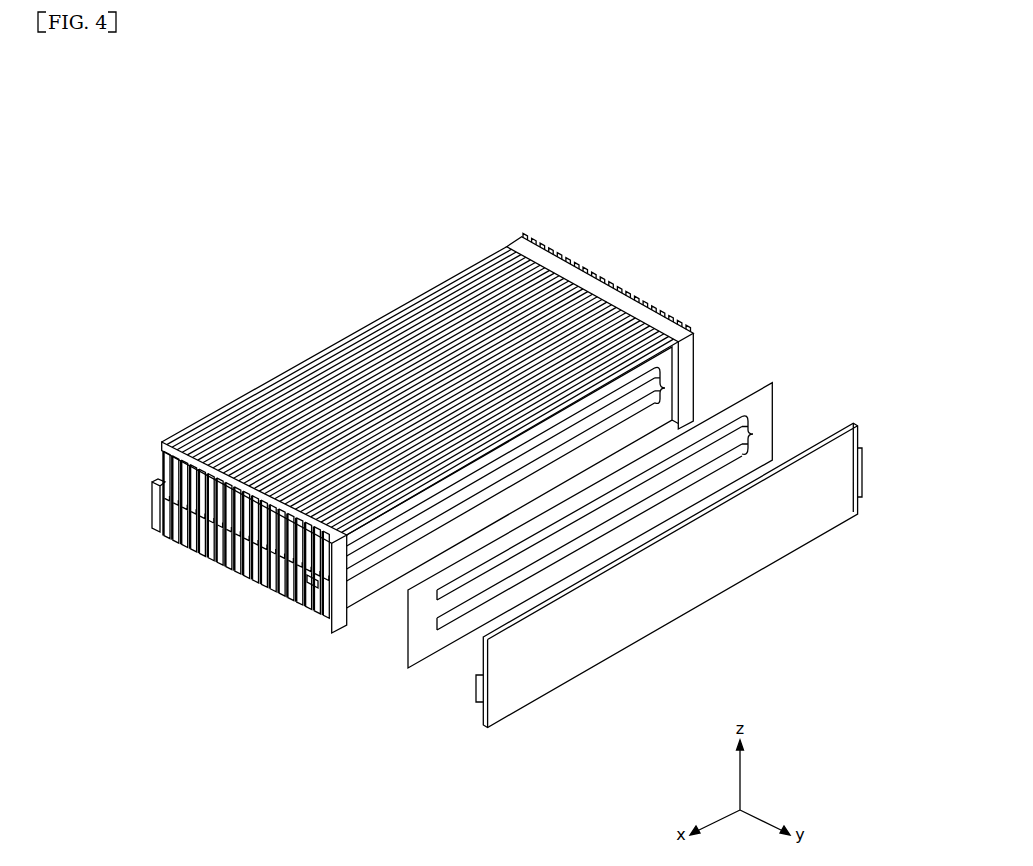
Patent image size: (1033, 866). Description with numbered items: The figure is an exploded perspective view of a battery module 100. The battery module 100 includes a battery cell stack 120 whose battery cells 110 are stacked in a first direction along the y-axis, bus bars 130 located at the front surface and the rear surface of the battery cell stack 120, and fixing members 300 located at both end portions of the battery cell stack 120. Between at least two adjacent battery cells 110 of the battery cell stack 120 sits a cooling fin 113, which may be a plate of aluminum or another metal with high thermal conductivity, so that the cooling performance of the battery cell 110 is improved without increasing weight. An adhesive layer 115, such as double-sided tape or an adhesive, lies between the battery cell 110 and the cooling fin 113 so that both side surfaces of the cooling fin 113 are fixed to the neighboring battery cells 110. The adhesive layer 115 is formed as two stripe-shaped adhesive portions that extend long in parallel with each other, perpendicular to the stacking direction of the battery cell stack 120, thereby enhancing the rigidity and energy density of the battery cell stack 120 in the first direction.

The battery module 100 is at (375, 83).
The battery cell 110 is at (730, 560).
The cooling fin 113 is at (426, 654).
The adhesive layer 115 is at (664, 385).
The battery cell stack 120 is at (372, 366).
The bus bar 130 is at (255, 598).
The fixing member 300 is at (521, 235).